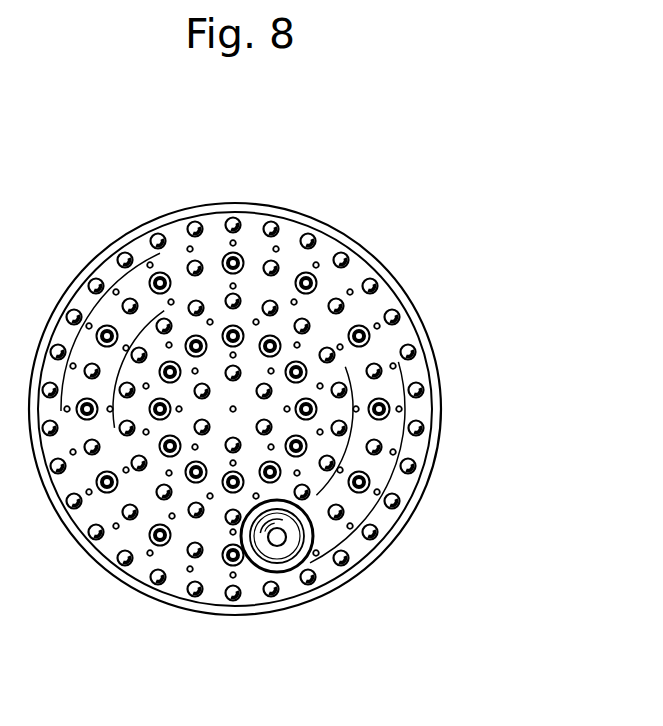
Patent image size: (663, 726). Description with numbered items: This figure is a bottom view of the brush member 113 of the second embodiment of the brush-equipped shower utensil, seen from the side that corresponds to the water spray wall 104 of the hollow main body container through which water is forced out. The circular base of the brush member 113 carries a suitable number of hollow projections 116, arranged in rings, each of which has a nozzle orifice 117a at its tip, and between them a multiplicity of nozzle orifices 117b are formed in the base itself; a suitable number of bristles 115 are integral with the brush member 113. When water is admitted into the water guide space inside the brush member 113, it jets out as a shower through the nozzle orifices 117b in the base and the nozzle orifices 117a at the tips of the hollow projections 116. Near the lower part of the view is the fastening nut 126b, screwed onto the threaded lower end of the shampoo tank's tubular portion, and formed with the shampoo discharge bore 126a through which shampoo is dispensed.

The water spray wall 104 is at (397, 483).
The brush member 113 is at (147, 605).
The bristles 115 is at (336, 297).
The hollow projections 116 is at (272, 336).
The nozzle orifices 117a is at (266, 337).
The nozzle orifices 117b is at (402, 408).
The shampoo discharge bore 126a is at (277, 540).
The fastening nut 126b is at (257, 564).